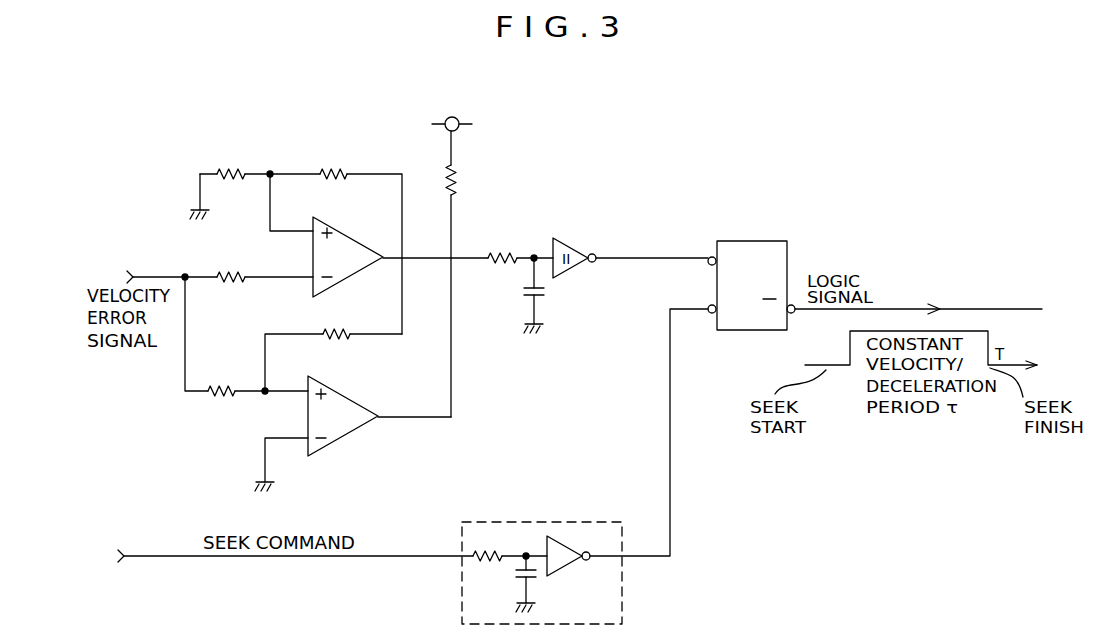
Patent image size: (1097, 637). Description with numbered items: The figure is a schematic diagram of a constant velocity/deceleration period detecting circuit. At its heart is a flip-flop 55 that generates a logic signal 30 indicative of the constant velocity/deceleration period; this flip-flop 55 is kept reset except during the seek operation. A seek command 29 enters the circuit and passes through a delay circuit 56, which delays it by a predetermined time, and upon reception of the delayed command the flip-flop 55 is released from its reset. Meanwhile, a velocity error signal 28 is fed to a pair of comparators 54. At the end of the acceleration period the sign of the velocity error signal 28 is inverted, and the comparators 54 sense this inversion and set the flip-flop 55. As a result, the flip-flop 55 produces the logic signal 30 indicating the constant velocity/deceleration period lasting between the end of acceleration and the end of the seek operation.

The velocity error signal 28 is at (155, 276).
The seek command 29 is at (155, 555).
The logic signal 30 is at (900, 308).
The comparators 54 is at (355, 241).
The flip-flop 55 is at (753, 241).
The delay circuit 56 is at (577, 522).